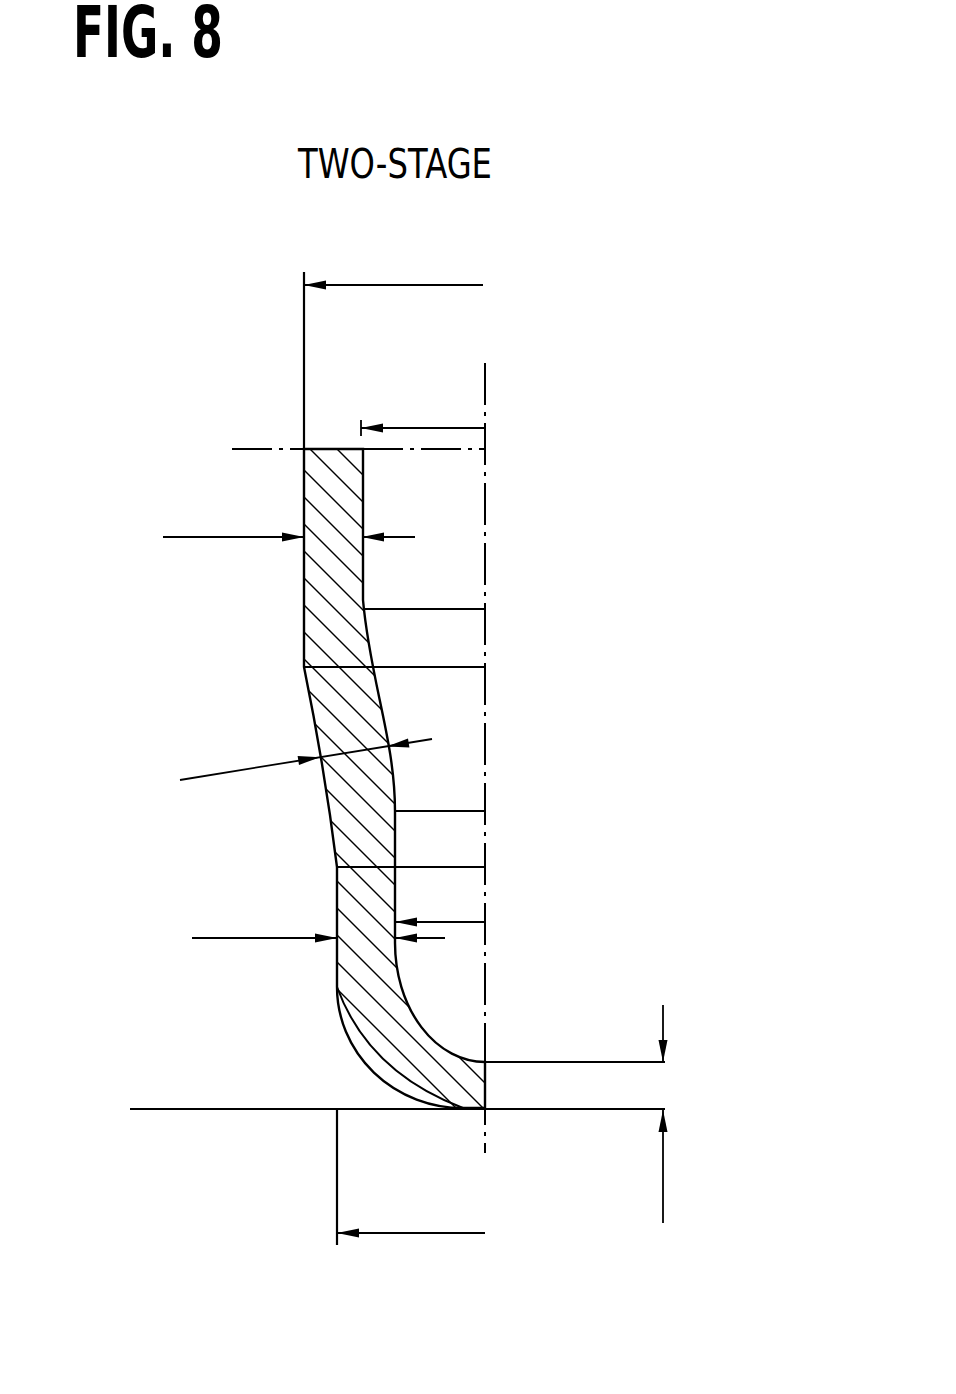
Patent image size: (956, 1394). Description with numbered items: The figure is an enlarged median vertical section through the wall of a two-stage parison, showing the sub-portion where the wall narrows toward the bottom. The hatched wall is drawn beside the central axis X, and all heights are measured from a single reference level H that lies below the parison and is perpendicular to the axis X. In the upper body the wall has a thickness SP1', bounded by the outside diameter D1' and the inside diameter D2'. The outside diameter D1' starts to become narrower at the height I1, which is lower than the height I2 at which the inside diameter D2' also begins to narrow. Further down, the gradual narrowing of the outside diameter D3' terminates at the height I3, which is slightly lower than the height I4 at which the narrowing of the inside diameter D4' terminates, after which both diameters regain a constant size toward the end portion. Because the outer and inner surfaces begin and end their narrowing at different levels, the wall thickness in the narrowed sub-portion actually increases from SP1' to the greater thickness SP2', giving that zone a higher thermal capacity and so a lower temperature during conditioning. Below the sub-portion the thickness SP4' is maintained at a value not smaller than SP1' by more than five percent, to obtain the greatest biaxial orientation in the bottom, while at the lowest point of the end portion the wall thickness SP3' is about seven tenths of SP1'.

The outside diameter D1' is at (393, 266).
The inside diameter D2' is at (423, 411).
The outside diameter D3' is at (411, 1214).
The inside diameter D4' is at (440, 901).
The wall thickness of the parison body SP1' is at (289, 516).
The increased wall thickness SP2' is at (306, 752).
The wall thickness at lowest point of end portion SP3' is at (644, 1114).
The wall thickness of the lower portion SP4' is at (318, 919).
The height at which outside diameter starts narrowing I1 is at (413, 659).
The height at which inside diameter starts narrowing I2 is at (446, 606).
The height at which outside diameter narrowing terminates I3 is at (433, 866).
The height at which inside diameter narrowing terminates I4 is at (462, 808).
The axis X is at (486, 492).
The reference level H is at (373, 1102).